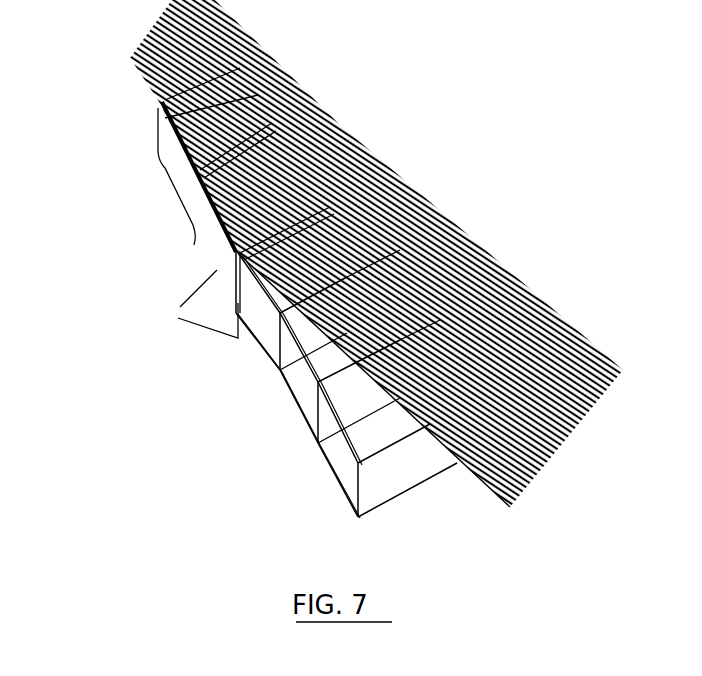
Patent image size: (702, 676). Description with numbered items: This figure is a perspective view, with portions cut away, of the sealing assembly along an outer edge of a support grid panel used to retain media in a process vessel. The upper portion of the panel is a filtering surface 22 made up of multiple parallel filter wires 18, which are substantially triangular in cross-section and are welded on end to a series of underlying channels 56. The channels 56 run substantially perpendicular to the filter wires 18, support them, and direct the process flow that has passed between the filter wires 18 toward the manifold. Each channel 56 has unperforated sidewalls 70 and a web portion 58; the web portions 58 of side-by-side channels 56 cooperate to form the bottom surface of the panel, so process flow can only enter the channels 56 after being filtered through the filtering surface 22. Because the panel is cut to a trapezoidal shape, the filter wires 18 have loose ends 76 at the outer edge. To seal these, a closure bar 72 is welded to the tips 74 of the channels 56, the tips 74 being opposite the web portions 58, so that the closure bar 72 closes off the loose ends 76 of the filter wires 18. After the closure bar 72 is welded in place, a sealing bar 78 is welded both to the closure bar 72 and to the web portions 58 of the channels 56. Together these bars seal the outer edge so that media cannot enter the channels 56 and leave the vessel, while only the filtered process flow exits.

The filter wires 18 is at (568, 324).
The filtering surface 22 is at (450, 302).
The channels 56 is at (346, 400).
The web portion 58 is at (334, 477).
The sidewalls 70 is at (353, 417).
The closure bar 72 is at (175, 158).
The tips 74 is at (270, 335).
The loose ends 76 is at (167, 125).
The sealing bar 78 is at (187, 227).